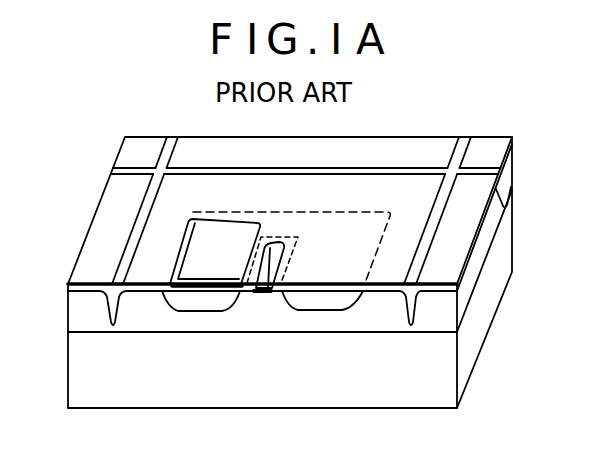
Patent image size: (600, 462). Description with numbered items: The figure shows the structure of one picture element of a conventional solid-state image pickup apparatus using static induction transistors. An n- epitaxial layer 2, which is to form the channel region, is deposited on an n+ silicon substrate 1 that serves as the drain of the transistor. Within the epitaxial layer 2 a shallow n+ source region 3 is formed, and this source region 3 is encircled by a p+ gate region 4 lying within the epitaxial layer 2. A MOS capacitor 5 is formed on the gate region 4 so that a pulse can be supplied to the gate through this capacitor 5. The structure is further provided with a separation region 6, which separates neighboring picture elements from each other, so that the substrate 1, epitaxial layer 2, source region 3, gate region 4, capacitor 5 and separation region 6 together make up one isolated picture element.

The n+ silicon substrate 1 is at (419, 390).
The n- epitaxial layer 2 is at (177, 322).
The n+ source region 3 is at (270, 252).
The p+ gate region 4 is at (223, 303).
The MOS capacitor 5 is at (210, 235).
The separation region 6 is at (118, 333).